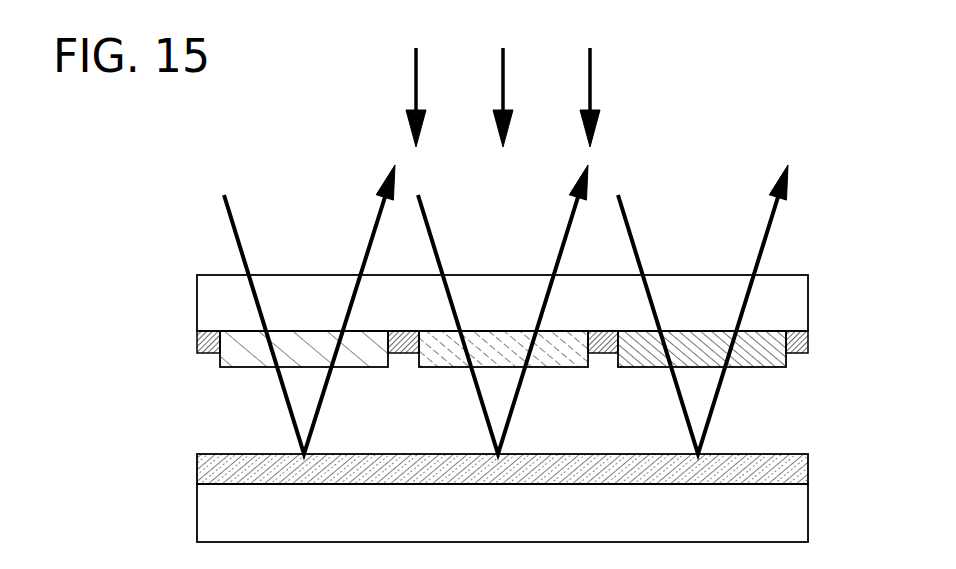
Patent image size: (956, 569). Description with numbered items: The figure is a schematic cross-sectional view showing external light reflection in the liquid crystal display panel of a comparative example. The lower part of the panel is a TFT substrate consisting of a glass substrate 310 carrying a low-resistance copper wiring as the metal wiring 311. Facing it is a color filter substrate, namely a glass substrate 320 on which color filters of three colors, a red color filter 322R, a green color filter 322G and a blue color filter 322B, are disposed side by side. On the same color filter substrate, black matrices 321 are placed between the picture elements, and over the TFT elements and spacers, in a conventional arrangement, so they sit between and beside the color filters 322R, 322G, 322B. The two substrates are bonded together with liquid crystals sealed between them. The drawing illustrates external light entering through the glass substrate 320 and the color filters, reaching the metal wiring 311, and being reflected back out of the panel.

The glass substrate 310 is at (210, 514).
The metal wiring 311 is at (210, 467).
The glass substrate 320 is at (212, 296).
The black matrices 321 is at (208, 342).
The red color filter 322R is at (308, 348).
The green color filter 322G is at (505, 348).
The blue color filter 322B is at (701, 348).